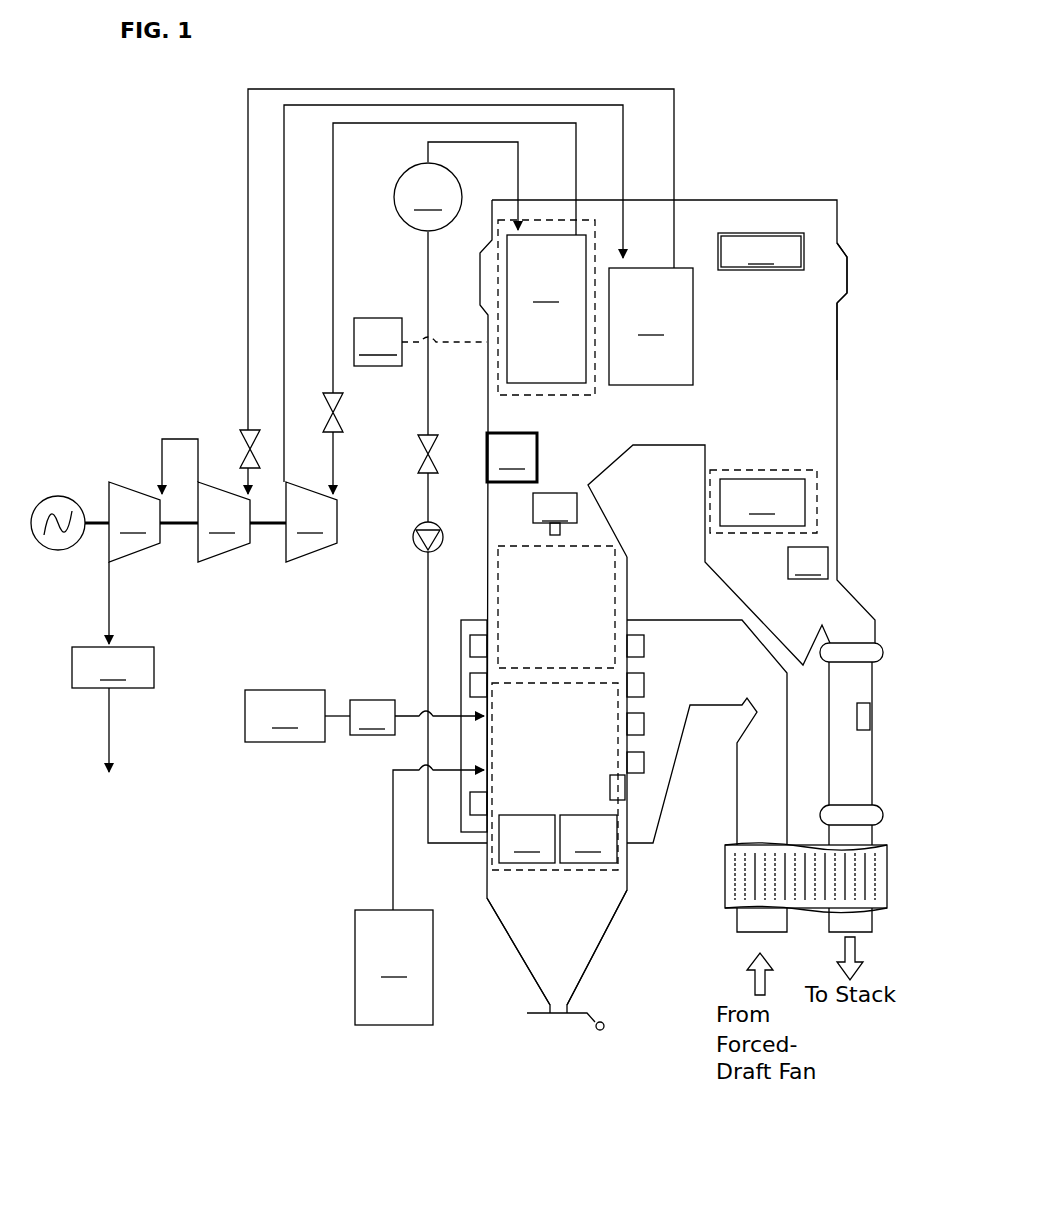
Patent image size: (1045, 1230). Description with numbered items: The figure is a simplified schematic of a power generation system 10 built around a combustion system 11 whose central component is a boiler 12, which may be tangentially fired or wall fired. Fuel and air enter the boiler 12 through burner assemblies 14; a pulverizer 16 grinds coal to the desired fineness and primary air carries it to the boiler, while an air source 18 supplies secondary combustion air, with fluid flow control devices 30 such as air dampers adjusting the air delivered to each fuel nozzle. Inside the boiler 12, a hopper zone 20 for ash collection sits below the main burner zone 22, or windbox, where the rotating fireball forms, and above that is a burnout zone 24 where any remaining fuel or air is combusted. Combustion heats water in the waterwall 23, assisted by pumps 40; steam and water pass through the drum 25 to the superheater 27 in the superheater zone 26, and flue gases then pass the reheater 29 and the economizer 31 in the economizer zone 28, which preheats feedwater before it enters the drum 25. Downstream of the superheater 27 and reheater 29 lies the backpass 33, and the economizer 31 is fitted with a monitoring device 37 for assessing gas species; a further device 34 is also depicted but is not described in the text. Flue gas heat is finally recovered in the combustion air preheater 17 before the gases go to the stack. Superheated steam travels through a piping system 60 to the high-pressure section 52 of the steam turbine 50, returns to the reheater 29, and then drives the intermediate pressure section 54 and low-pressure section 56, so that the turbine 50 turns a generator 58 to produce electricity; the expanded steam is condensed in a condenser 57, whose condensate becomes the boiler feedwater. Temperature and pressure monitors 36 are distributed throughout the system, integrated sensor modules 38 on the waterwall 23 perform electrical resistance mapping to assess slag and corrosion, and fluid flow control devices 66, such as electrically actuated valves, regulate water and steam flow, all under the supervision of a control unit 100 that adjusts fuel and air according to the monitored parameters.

The power generation system 10 is at (808, 104).
The combustion system 11 is at (843, 186).
The boiler 12 is at (862, 287).
The burner assemblies 14 is at (558, 839).
The pulverizer 16 is at (419, 895).
The combustion air preheater 17 is at (887, 882).
The air source 18 is at (297, 716).
The hopper zone 20 is at (578, 930).
The main burner zone 22 is at (490, 857).
The waterwall 23 is at (627, 590).
The burnout zone 24 is at (497, 573).
The drum 25 is at (428, 197).
The superheater zone 26 is at (550, 397).
The superheater 27 is at (546, 309).
The economizer zone 28 is at (772, 466).
The reheater 29 is at (651, 326).
The fluid flow control devices 30 is at (417, 717).
The economizer 31 is at (762, 502).
The backpass 33 is at (837, 380).
The sensor 34 is at (555, 514).
The temperature and pressure monitors 36 is at (405, 170).
The monitoring device 37 is at (808, 563).
The integrated sensor modules 38 is at (470, 800).
The pumps 40 is at (413, 544).
The steam turbine 50 is at (211, 563).
The high-pressure section 52 is at (311, 522).
The intermediate pressure section 54 is at (224, 522).
The low-pressure section 56 is at (134, 522).
The condenser 57 is at (113, 667).
The generator 58 is at (58, 495).
The piping system 60 is at (236, 277).
The fluid flow control devices 66 is at (422, 470).
The control unit 100 is at (420, 342).